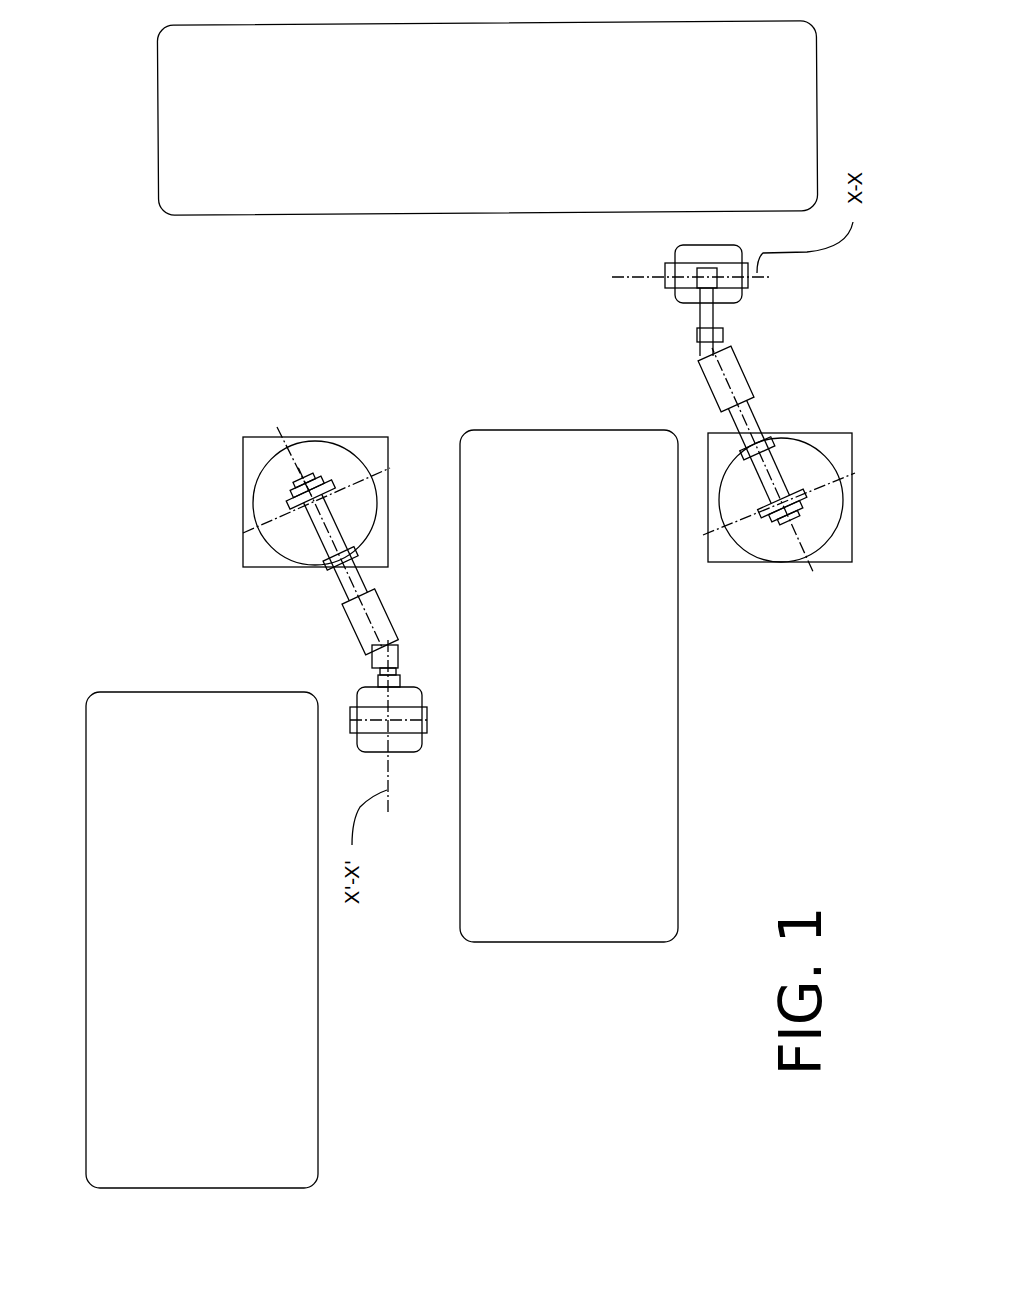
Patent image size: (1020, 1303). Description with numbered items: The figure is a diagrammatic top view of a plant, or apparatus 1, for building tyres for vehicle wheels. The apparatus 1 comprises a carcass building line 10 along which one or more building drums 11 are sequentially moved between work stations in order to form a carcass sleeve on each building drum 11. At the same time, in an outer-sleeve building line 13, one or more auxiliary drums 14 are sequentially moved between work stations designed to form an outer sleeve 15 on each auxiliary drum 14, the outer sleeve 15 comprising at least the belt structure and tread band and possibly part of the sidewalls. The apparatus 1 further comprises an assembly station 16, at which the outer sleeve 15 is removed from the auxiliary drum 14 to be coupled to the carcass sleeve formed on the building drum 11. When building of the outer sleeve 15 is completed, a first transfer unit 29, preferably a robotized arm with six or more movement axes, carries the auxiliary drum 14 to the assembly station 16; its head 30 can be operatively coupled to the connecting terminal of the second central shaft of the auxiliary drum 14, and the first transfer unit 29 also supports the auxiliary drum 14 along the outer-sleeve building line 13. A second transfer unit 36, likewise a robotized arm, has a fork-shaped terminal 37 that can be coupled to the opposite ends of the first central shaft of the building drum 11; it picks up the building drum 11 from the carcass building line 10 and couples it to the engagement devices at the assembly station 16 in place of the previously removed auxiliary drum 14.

The apparatus for building tyres 1 is at (190, 432).
The carcass building line 10 is at (204, 152).
The building drum 11 is at (687, 308).
The outer-sleeve building line 13 is at (113, 763).
The auxiliary drum 14 is at (420, 747).
The outer sleeve 15 is at (427, 715).
The assembly station 16 is at (502, 470).
The first transfer unit 29 is at (387, 547).
The head 30 is at (402, 648).
The second transfer unit 36 is at (782, 428).
The fork-shaped terminal 37 is at (668, 263).